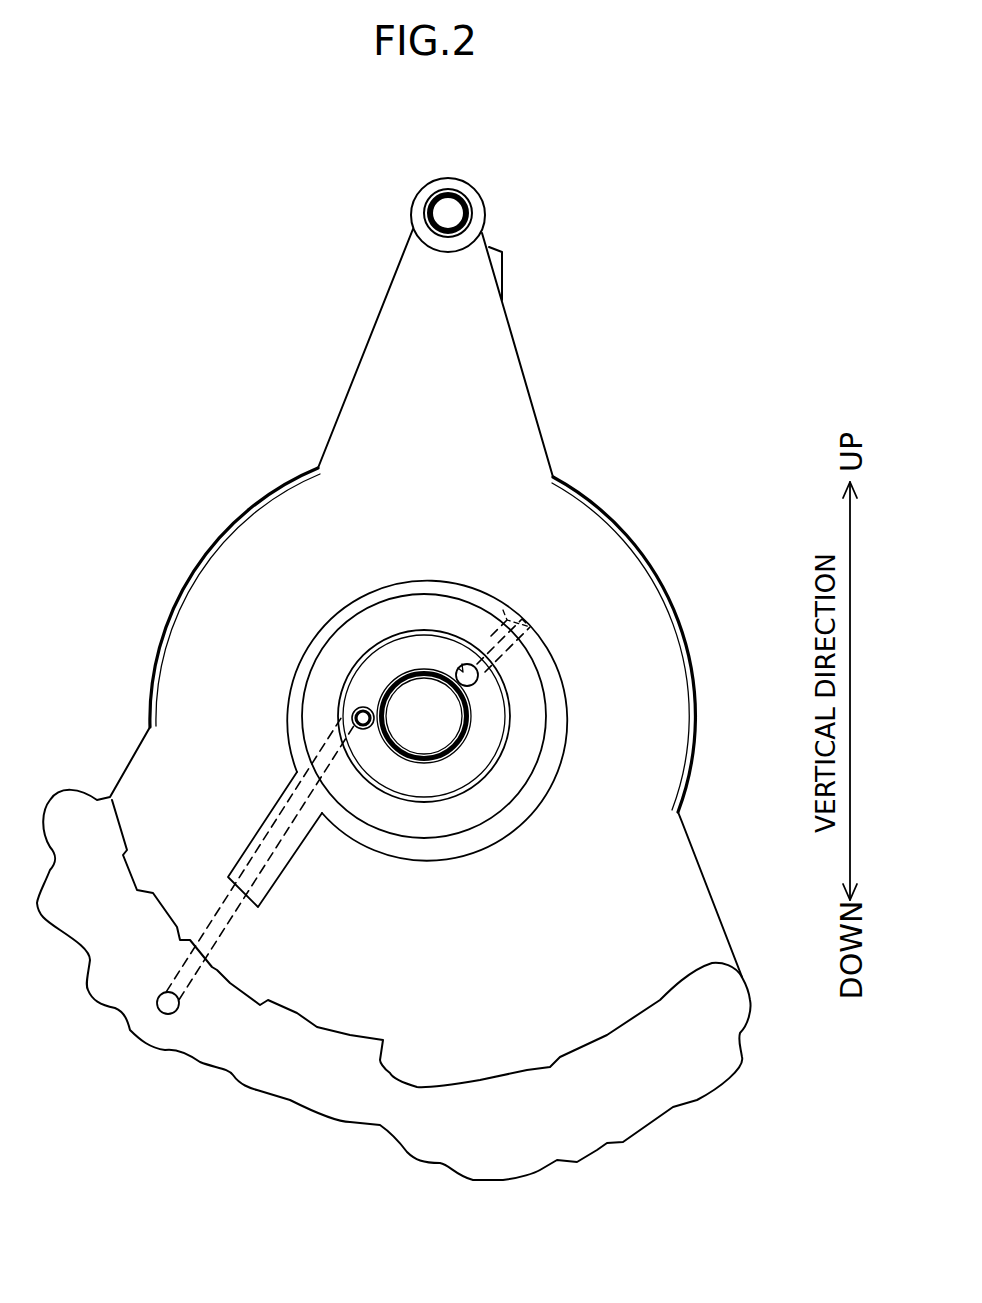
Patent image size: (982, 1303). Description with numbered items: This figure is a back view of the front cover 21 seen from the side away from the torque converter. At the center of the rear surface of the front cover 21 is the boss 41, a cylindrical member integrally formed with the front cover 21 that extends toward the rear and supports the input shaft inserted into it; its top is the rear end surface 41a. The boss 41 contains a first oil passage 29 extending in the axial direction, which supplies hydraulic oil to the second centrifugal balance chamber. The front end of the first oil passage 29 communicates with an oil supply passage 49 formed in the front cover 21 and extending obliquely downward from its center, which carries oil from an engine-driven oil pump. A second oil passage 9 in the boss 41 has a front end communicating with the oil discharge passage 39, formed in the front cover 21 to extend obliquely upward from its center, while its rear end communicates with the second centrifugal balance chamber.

The second oil passage 9 is at (470, 663).
The front cover 21 is at (690, 638).
The first oil passage 29 is at (352, 707).
The oil discharge passage 39 is at (495, 632).
The boss 41 is at (523, 693).
The rear end surface 41a is at (392, 662).
The oil supply passage 49 is at (235, 919).